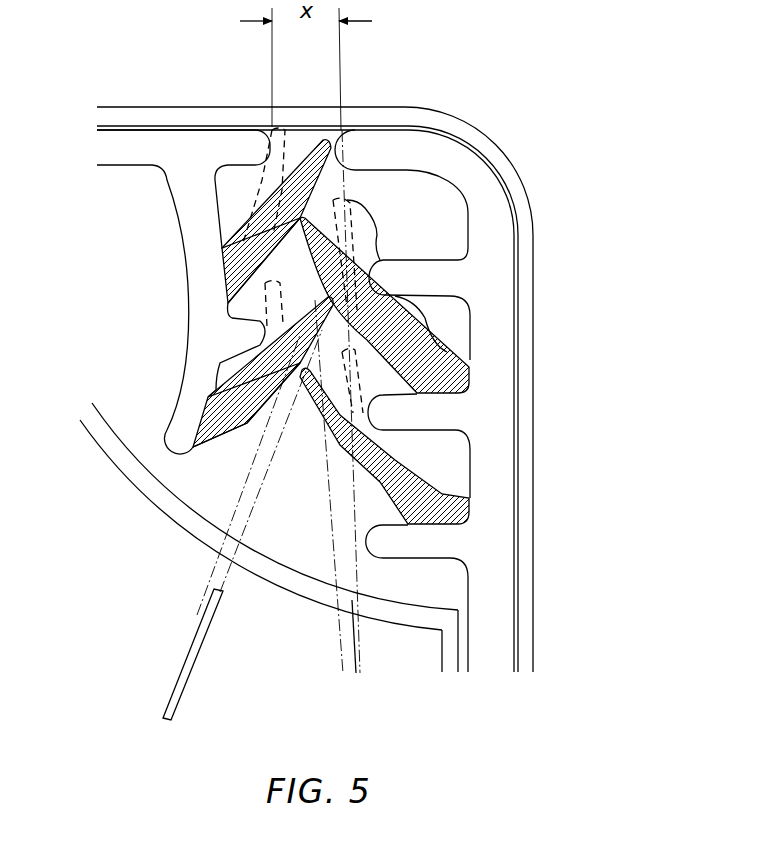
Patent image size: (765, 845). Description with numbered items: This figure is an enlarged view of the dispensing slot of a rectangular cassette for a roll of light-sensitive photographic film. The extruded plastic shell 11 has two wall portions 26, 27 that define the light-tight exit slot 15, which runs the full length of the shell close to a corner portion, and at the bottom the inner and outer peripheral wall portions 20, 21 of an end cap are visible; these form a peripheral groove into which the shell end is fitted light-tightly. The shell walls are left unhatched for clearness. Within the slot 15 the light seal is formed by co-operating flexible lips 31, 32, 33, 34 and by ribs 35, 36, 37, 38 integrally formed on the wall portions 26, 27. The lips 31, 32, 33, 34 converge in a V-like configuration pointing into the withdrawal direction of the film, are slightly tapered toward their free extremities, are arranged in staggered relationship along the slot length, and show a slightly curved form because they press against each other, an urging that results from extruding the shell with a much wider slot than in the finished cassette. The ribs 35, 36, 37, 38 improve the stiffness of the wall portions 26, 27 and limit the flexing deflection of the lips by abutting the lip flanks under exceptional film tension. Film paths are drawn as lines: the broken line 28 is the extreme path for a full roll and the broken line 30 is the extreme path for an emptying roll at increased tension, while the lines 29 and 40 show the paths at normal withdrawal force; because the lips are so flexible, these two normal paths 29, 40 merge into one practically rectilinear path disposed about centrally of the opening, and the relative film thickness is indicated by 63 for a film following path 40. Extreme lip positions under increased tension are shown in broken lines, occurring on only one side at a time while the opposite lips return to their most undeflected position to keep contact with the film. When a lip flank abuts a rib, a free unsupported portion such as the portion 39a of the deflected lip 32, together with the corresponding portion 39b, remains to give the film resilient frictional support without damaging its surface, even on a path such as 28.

The shell 11 is at (487, 667).
The light-tight exit slot 15 is at (312, 112).
The inner peripheral wall portion 20 is at (450, 673).
The outer peripheral wall portion 21 is at (518, 670).
The wall portion 26 is at (203, 303).
The wall portion 27 is at (497, 358).
The film path 28 is at (363, 663).
The film path 29 is at (350, 640).
The film path 30 is at (183, 645).
The flexible lip 31 is at (283, 195).
The flexible lip 32 is at (340, 260).
The flexible lip 33 is at (213, 422).
The flexible lip 34 is at (437, 488).
The rib 35 is at (243, 146).
The rib 36 is at (433, 273).
The rib 37 is at (243, 343).
The rib 38 is at (425, 425).
The free unsupported lip portion 39a is at (385, 225).
The gap 39b is at (427, 315).
The film path 40 is at (247, 513).
The film thickness 63 is at (190, 690).